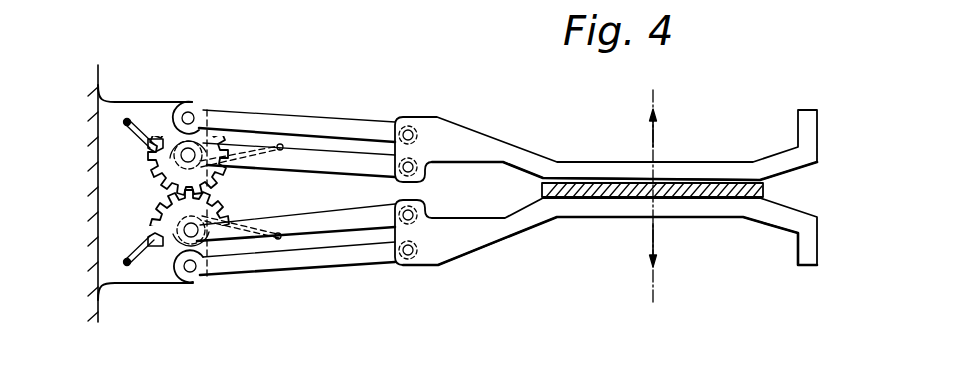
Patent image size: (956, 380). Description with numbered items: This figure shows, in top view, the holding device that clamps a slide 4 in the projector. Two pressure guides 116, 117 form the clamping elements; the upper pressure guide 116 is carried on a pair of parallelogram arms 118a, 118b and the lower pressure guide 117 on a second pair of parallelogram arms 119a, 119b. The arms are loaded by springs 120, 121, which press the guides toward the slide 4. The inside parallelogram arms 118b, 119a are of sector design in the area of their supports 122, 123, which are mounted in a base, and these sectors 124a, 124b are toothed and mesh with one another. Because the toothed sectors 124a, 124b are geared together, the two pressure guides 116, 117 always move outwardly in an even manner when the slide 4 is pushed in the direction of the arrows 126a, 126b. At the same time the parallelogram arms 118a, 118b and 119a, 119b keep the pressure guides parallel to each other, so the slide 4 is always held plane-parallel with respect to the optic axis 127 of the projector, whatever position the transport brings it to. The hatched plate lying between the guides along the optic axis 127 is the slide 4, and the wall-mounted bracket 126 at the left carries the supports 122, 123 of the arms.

The workpiece plate 4 is at (593, 199).
The pressure guide 116 is at (475, 138).
The pressure guide 117 is at (488, 232).
The parallelogram arm 118a is at (335, 128).
The parallelogram arm 118b is at (302, 160).
The parallelogram arm 119a is at (370, 267).
The parallelogram arm 119b is at (315, 253).
The spring 120 is at (251, 157).
The spring 121 is at (251, 226).
The support 122 is at (177, 136).
The support 123 is at (185, 284).
The toothed sector 124a is at (150, 153).
The toothed sector 124b is at (152, 212).
The support bracket 126 is at (143, 273).
The arrow 126a is at (657, 132).
The arrow 126b is at (657, 243).
The optic axis 127 is at (657, 297).